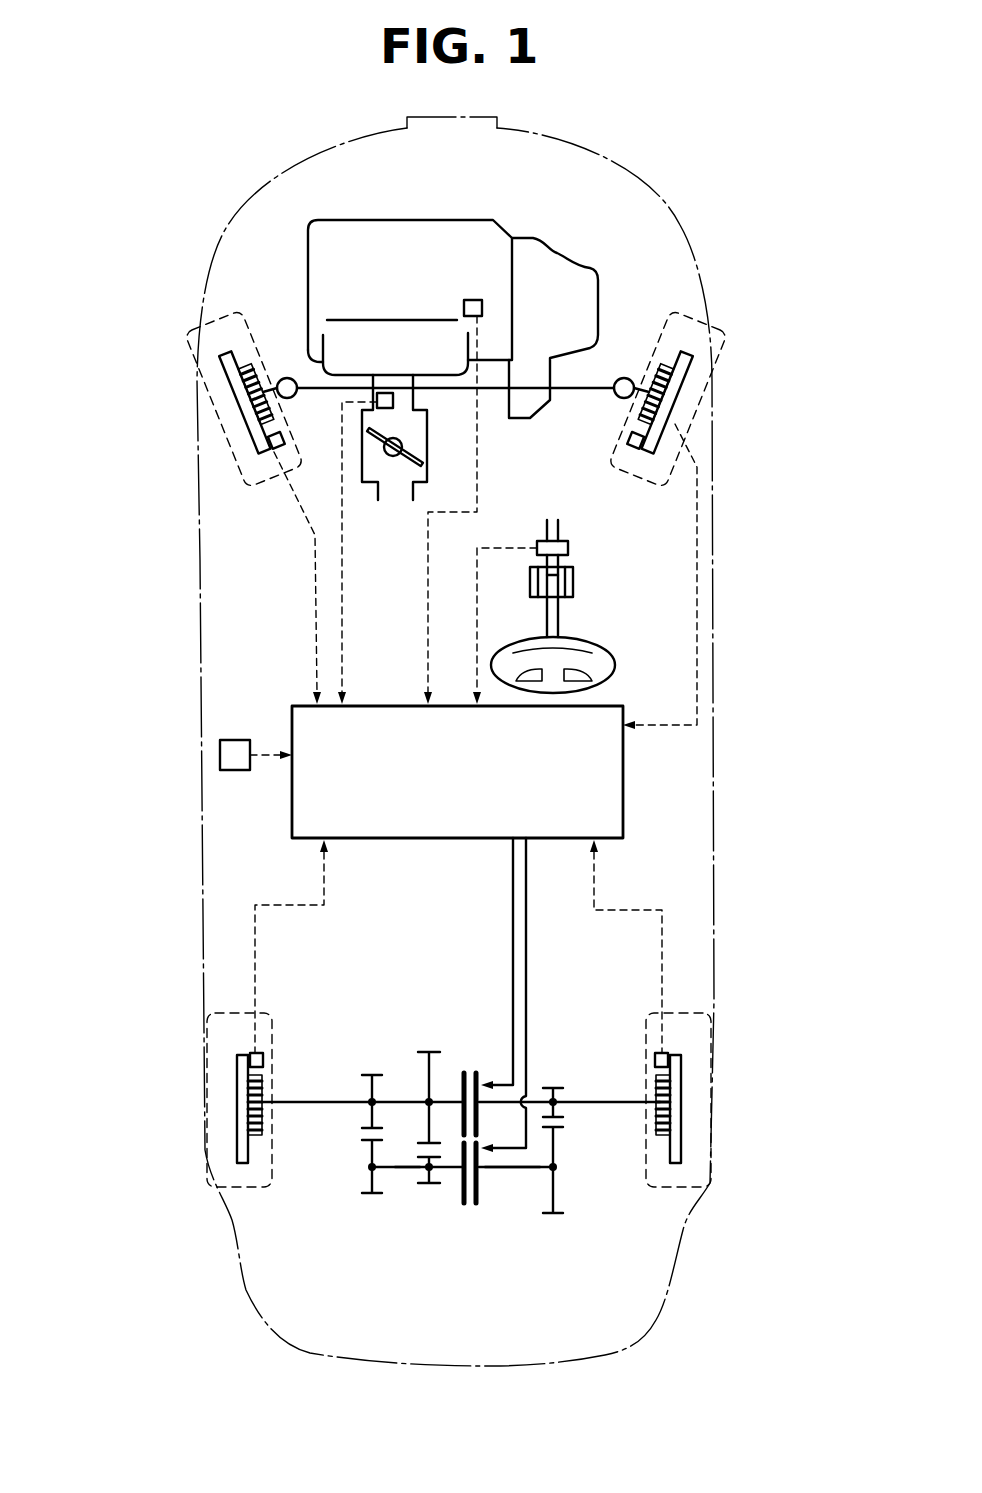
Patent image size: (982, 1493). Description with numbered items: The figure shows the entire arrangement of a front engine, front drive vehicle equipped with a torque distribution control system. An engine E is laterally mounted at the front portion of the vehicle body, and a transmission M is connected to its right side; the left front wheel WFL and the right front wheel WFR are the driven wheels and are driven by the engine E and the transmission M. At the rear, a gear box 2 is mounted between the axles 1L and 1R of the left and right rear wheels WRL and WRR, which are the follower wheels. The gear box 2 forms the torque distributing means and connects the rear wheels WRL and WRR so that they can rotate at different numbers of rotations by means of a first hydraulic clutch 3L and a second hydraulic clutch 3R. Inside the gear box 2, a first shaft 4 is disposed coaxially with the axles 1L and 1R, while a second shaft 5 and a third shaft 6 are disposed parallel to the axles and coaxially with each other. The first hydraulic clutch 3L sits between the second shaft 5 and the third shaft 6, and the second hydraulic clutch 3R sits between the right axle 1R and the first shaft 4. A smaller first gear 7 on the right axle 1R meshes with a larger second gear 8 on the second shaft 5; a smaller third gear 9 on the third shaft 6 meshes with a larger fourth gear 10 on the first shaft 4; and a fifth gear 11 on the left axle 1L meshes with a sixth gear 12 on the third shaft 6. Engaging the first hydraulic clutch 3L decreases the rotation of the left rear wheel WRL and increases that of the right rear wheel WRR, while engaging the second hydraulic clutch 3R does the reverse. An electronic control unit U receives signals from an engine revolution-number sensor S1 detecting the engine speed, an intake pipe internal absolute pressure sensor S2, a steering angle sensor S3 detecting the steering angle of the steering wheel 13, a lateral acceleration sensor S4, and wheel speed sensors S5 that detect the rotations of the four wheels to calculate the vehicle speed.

The engine E is at (378, 253).
The transmission M is at (537, 253).
The engine revolution-number sensor S1 is at (464, 300).
The intake pipe internal absolute pressure sensor S2 is at (386, 395).
The steering angle sensor S3 is at (537, 546).
The lateral acceleration sensor S4 is at (242, 748).
The wheel speed sensors S5 is at (655, 1058).
The steering wheel 13 is at (592, 648).
The electronic control unit U is at (460, 790).
The left front wheel WFL is at (190, 355).
The right front wheel WFR is at (688, 325).
The left rear wheel WRL is at (207, 1088).
The right rear wheel WRR is at (717, 1090).
The gear box 2 is at (450, 1003).
The left axle 1L is at (327, 1105).
The right axle 1R is at (623, 1106).
The first hydraulic clutch 3L is at (474, 1215).
The second hydraulic clutch 3R is at (484, 1062).
The first shaft 4 is at (447, 1097).
The second shaft 5 is at (507, 1170).
The third shaft 6 is at (403, 1170).
The first gear 7 is at (555, 1088).
The second gear 8 is at (557, 1213).
The third gear 9 is at (433, 1190).
The fourth gear 10 is at (430, 1052).
The fifth gear 11 is at (373, 1073).
The sixth gear 12 is at (367, 1197).